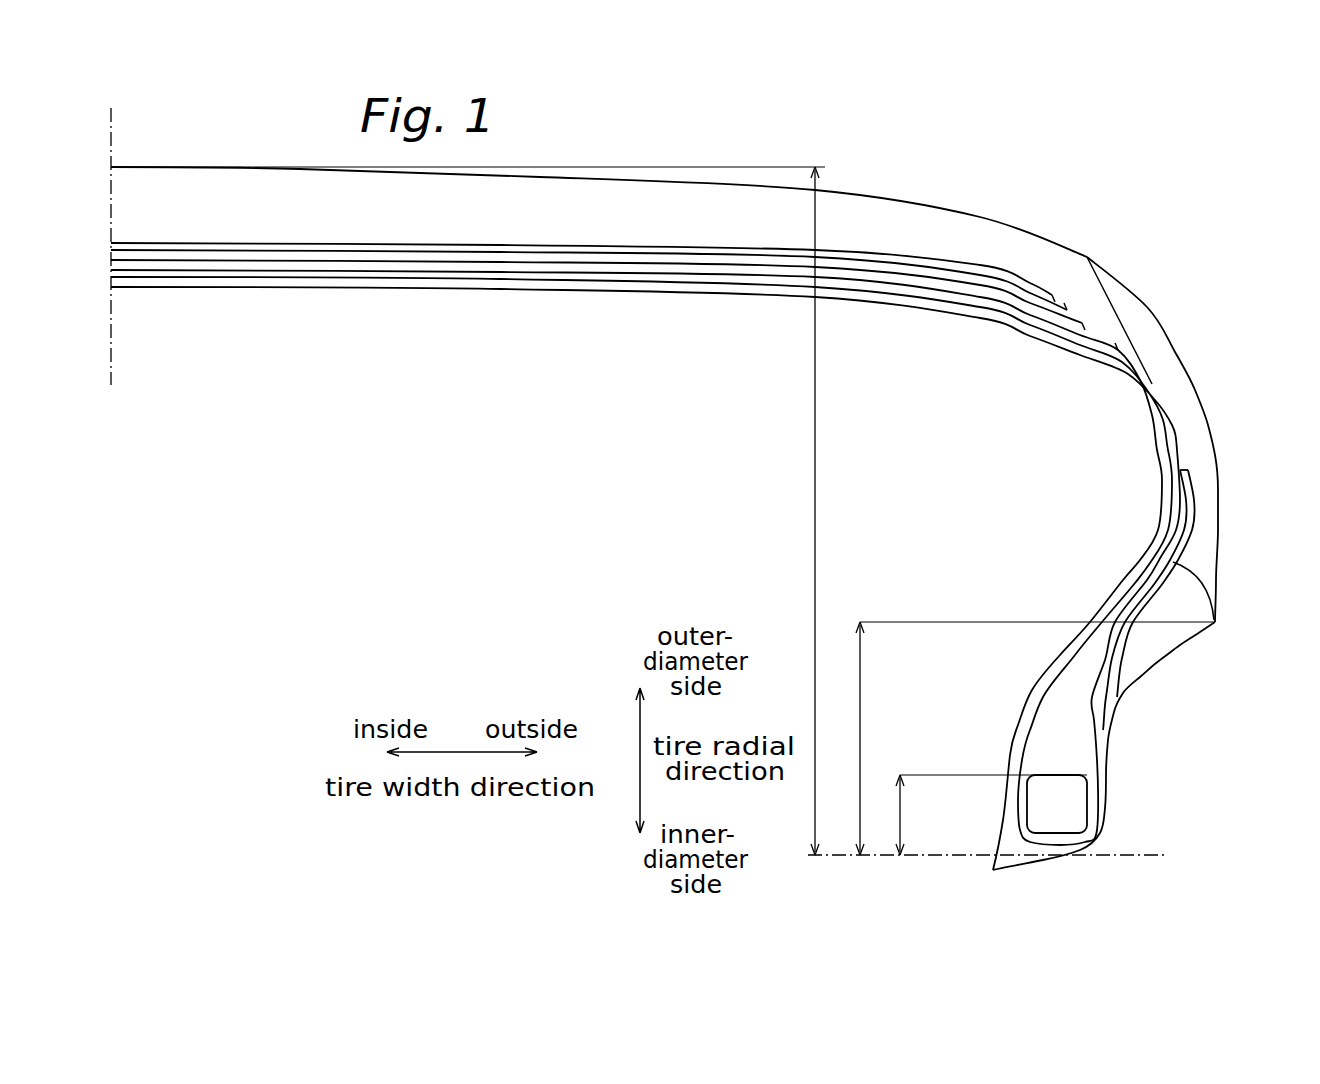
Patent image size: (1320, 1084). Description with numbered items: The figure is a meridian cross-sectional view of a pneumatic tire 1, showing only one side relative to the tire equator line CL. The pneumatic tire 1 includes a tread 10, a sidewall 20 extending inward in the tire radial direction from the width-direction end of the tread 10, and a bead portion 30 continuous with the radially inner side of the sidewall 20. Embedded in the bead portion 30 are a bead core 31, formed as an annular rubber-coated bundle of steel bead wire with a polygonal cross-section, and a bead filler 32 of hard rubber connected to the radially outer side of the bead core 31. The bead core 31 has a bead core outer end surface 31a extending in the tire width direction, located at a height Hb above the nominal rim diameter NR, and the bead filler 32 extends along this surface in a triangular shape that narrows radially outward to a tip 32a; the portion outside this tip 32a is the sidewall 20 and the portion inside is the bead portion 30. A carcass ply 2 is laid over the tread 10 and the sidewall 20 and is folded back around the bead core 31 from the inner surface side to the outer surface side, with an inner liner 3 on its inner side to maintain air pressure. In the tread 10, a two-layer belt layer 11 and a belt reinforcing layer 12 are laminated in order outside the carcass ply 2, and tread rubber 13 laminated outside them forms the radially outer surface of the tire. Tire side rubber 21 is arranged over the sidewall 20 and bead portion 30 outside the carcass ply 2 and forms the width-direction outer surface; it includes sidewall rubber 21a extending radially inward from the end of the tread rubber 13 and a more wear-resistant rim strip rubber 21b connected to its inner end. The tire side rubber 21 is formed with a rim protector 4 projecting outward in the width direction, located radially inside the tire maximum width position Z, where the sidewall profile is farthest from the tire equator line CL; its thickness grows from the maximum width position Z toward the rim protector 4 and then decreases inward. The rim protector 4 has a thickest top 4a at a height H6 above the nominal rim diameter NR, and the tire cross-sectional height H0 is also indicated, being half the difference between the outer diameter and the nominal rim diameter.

The pneumatic tire 1 is at (1122, 228).
The tread 10 is at (873, 160).
The belt layer 11 is at (907, 273).
The belt reinforcing layer 12 is at (973, 272).
The tread rubber 13 is at (240, 195).
The carcass ply 2 is at (1152, 395).
The sidewall 20 is at (1185, 340).
The tire side rubber 21 is at (1281, 562).
The sidewall rubber 21a is at (1213, 523).
The rim strip rubber 21b is at (1215, 590).
The inner liner 3 is at (1142, 563).
The bead portion 30 is at (1135, 818).
The bead core 31 is at (1068, 805).
The bead core outer end surface 31a is at (1070, 775).
The bead filler 32 is at (1077, 697).
The tip of the bead filler 32a is at (1137, 597).
The rim protector 4 is at (1200, 618).
The top 4a is at (1213, 628).
The tire maximum width position Z is at (1222, 505).
The tire equator line CL is at (113, 368).
The tire cross-sectional height H0 is at (831, 511).
The height of the top H6 is at (1035, 738).
The height of the bead core outer end surface Hb is at (991, 815).
The nominal rim diameter NR is at (886, 857).